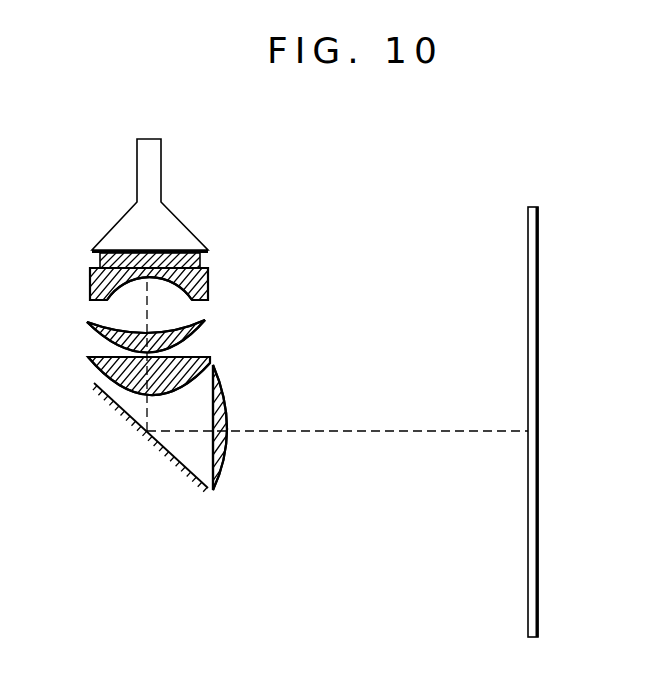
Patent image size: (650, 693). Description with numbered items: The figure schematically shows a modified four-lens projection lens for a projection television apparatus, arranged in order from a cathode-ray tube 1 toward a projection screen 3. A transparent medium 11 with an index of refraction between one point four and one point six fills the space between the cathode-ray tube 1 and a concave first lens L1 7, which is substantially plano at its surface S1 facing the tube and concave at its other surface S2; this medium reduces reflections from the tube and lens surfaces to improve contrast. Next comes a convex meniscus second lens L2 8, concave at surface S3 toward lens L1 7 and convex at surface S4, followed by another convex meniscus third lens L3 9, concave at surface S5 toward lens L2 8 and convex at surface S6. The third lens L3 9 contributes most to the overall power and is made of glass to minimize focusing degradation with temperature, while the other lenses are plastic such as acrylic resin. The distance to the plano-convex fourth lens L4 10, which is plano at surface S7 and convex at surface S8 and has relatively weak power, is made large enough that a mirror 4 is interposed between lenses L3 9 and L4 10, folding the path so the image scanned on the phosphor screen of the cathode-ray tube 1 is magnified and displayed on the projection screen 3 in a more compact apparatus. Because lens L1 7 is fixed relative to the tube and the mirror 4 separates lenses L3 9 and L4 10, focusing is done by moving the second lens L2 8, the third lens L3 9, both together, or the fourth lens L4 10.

The cathode-ray tube 1 is at (177, 228).
The transparent medium 11 is at (200, 262).
The concave lens L1 7 is at (141, 282).
The convex meniscus lens L2 8 is at (141, 328).
The convex meniscus lens L3 9 is at (152, 375).
The convex lens L4 10 is at (219, 437).
The projection screen 3 is at (536, 336).
The mirror 4 is at (167, 452).
The first lens L1 is at (132, 282).
The second lens L2 is at (130, 328).
The third lens L3 is at (152, 375).
The fourth lens L4 is at (219, 437).
The surface S1 is at (97, 268).
The surface S2 is at (110, 300).
The surface S3 is at (181, 327).
The surface S4 is at (100, 338).
The surface S5 is at (208, 352).
The surface S6 is at (180, 388).
The surface S7 is at (213, 462).
The surface S8 is at (223, 487).